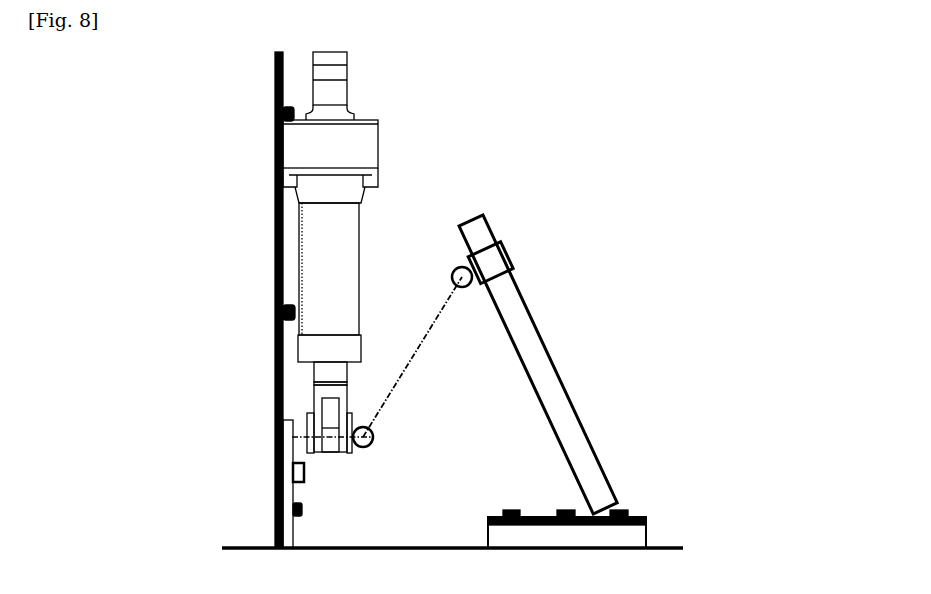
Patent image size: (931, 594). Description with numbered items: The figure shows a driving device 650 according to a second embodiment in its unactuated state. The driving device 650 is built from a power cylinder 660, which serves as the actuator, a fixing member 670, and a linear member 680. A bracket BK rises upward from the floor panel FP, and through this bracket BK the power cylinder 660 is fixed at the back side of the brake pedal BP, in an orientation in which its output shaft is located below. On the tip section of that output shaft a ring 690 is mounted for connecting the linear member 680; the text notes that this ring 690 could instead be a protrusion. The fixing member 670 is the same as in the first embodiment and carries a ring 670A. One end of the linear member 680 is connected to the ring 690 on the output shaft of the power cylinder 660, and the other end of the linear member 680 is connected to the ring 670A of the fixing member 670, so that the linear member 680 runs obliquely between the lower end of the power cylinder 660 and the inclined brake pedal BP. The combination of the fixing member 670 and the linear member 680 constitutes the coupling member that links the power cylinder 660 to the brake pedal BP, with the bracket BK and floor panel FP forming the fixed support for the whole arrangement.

The driving device 650 is at (445, 300).
The power cylinder 660 is at (378, 146).
The fixing member 670 is at (510, 252).
The ring 670A is at (458, 266).
The linear member 680 is at (412, 360).
The ring 690 is at (364, 447).
The bracket BK is at (275, 235).
The brake pedal BP is at (557, 370).
The floor panel FP is at (668, 547).